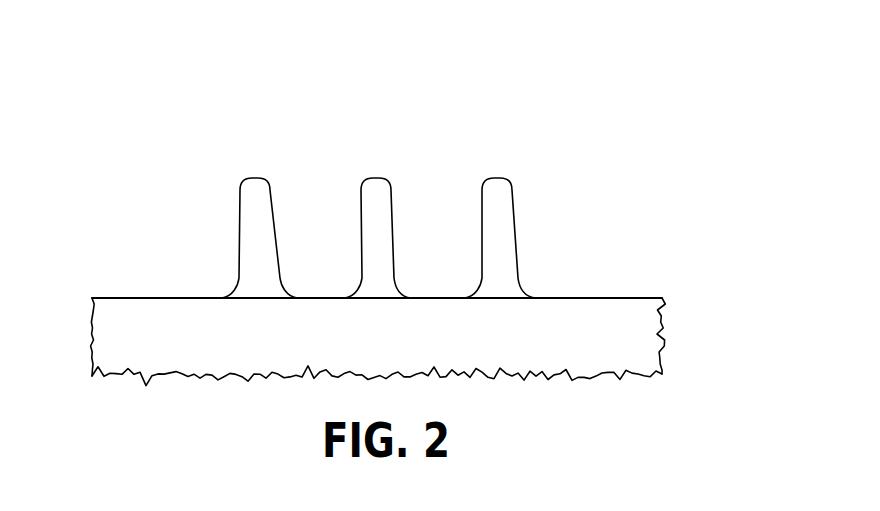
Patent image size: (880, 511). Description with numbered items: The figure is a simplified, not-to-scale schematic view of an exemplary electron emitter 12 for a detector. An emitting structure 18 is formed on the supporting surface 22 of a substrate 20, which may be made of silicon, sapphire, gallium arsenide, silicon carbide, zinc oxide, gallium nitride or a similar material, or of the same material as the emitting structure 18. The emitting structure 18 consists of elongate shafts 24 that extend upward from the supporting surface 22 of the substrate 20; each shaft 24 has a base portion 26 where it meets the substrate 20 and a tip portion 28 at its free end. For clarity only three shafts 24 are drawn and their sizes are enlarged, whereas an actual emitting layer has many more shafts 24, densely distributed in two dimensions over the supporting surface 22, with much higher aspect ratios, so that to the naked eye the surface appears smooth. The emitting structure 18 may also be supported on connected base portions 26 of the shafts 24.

The electron emitter 12 is at (110, 94).
The emitting structure 18 is at (553, 190).
The substrate 20 is at (657, 342).
The supporting surface 22 is at (637, 298).
The elongate shafts 24 is at (497, 192).
The base portion 26 is at (248, 280).
The tip portion 28 is at (248, 203).